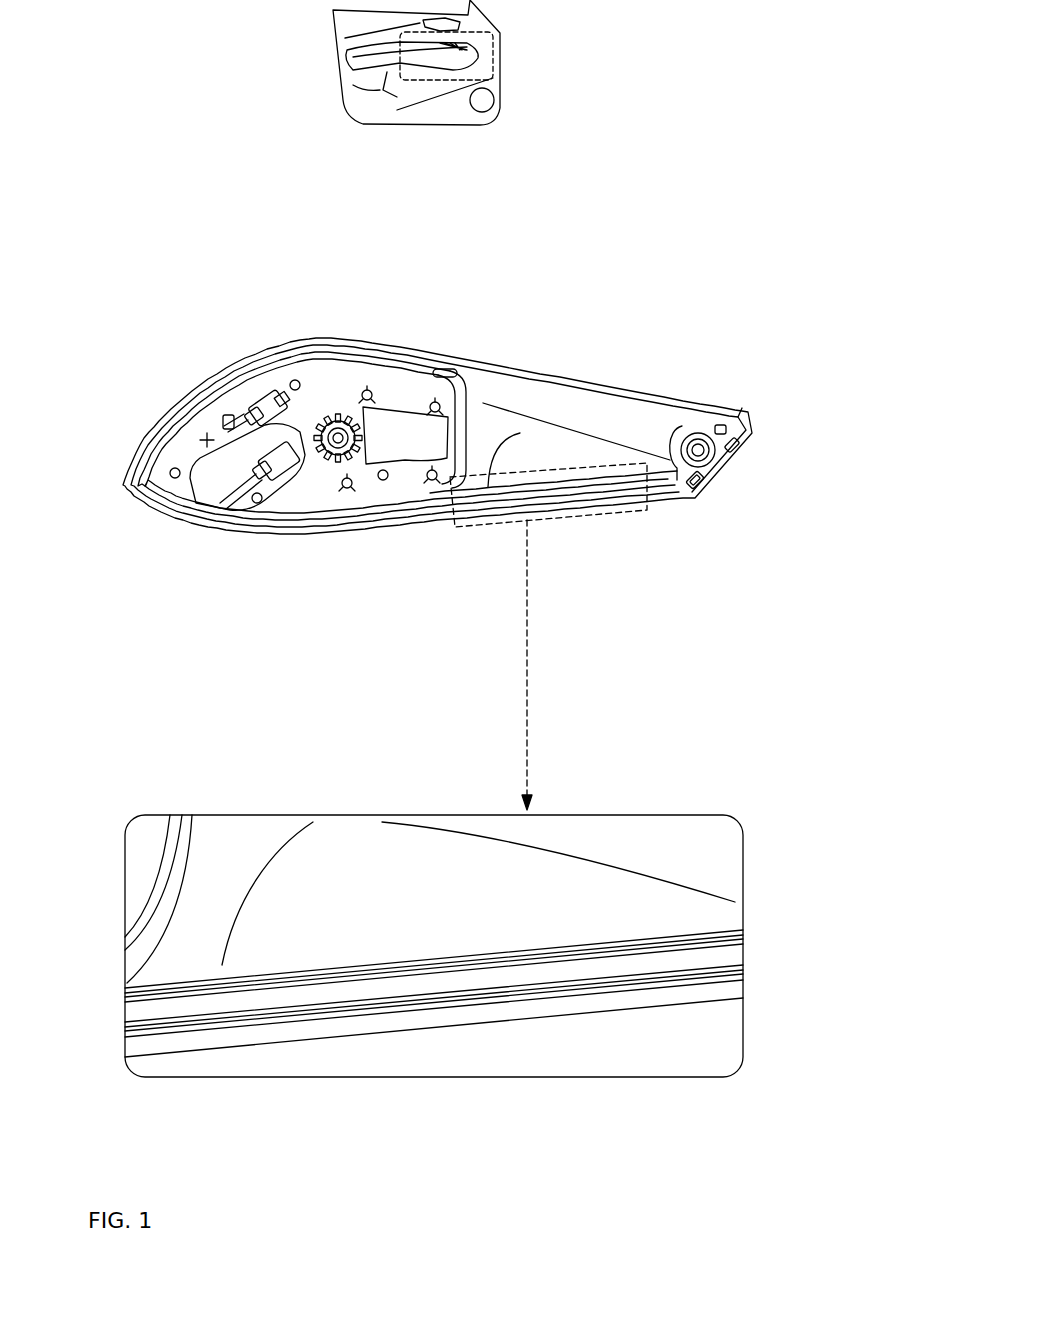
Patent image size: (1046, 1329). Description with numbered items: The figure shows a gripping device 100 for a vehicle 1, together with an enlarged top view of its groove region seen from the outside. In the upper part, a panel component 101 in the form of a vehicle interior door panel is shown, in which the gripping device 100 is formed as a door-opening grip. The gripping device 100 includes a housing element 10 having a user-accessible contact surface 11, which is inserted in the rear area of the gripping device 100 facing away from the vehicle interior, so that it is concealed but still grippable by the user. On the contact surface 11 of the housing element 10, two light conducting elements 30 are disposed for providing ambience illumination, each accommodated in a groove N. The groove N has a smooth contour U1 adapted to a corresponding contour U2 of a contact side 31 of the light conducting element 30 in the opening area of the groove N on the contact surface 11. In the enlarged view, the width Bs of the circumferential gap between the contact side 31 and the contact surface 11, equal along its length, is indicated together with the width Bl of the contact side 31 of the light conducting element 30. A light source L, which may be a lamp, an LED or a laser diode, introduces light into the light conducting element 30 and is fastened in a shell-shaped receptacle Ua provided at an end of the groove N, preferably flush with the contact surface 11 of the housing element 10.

The vehicle 1 is at (553, 121).
The panel component 101 is at (358, 23).
The gripping device 100 is at (457, 58).
The housing element 10 is at (508, 402).
The user-accessible contact surface 11 is at (552, 373).
The light conducting element 30 is at (382, 508).
The contact side 31 is at (651, 972).
The groove N is at (415, 485).
The smooth contour U1 is at (339, 334).
The corresponding contour U2 is at (321, 380).
The shell-shaped receptacle Ua is at (288, 428).
The light source L is at (275, 460).
The width of gap Bs is at (525, 903).
The width of contact side Bl is at (557, 903).